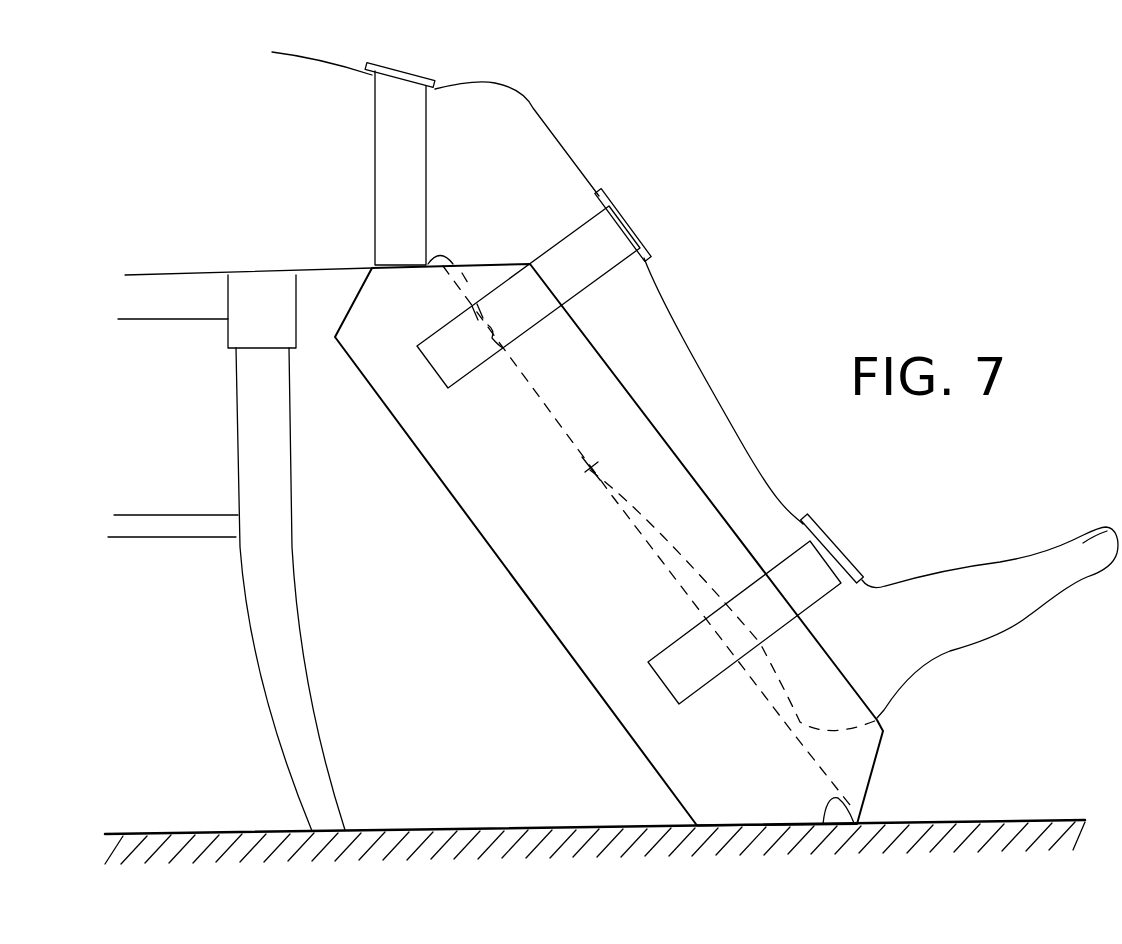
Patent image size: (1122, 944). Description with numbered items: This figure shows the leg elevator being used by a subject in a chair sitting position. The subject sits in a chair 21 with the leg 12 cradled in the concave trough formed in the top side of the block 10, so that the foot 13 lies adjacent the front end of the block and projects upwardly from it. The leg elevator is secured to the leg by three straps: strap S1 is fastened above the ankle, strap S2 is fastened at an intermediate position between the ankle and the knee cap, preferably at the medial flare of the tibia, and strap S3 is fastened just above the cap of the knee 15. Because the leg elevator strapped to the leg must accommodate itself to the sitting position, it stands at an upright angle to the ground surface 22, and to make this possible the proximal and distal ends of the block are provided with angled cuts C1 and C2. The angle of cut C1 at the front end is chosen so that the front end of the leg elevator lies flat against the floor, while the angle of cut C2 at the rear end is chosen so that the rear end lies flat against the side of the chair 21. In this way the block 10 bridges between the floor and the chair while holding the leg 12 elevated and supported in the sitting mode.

The block 10 is at (555, 613).
The leg 12 is at (688, 372).
The foot 13 is at (1023, 617).
The knee 15 is at (527, 120).
The chair 21 is at (283, 543).
The ground surface 22 is at (433, 834).
The strap S1 is at (830, 536).
The strap S2 is at (634, 234).
The strap S3 is at (400, 73).
The angled cut C1 is at (857, 826).
The angled cut C2 is at (352, 302).